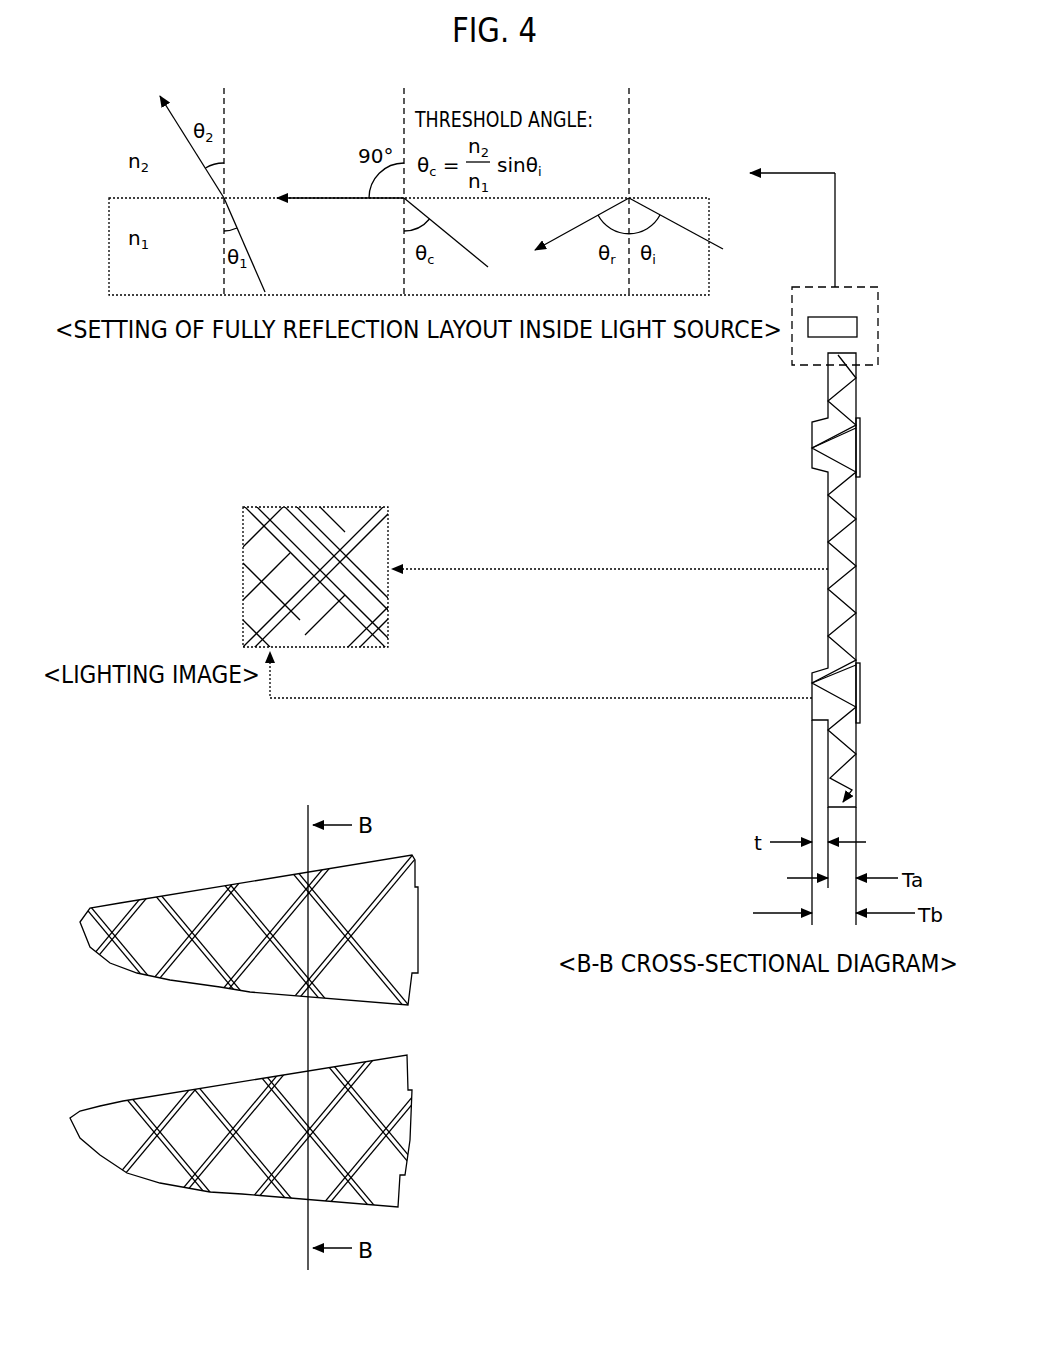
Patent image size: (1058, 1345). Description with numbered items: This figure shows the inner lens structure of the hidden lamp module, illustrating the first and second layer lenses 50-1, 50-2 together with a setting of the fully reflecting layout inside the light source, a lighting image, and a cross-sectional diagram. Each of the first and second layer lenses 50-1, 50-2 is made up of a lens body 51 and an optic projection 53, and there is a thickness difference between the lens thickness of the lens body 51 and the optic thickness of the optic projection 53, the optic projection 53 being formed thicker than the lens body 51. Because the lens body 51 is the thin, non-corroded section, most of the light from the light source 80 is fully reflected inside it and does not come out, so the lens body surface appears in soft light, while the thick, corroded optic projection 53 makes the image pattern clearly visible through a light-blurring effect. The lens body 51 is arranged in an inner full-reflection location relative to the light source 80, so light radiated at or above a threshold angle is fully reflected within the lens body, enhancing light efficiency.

The light source 80 is at (845, 318).
The lens body 51 is at (860, 430).
The optic projection 53 is at (812, 424).
The first layer lens 50-1 is at (418, 928).
The second layer lens 50-2 is at (410, 1131).